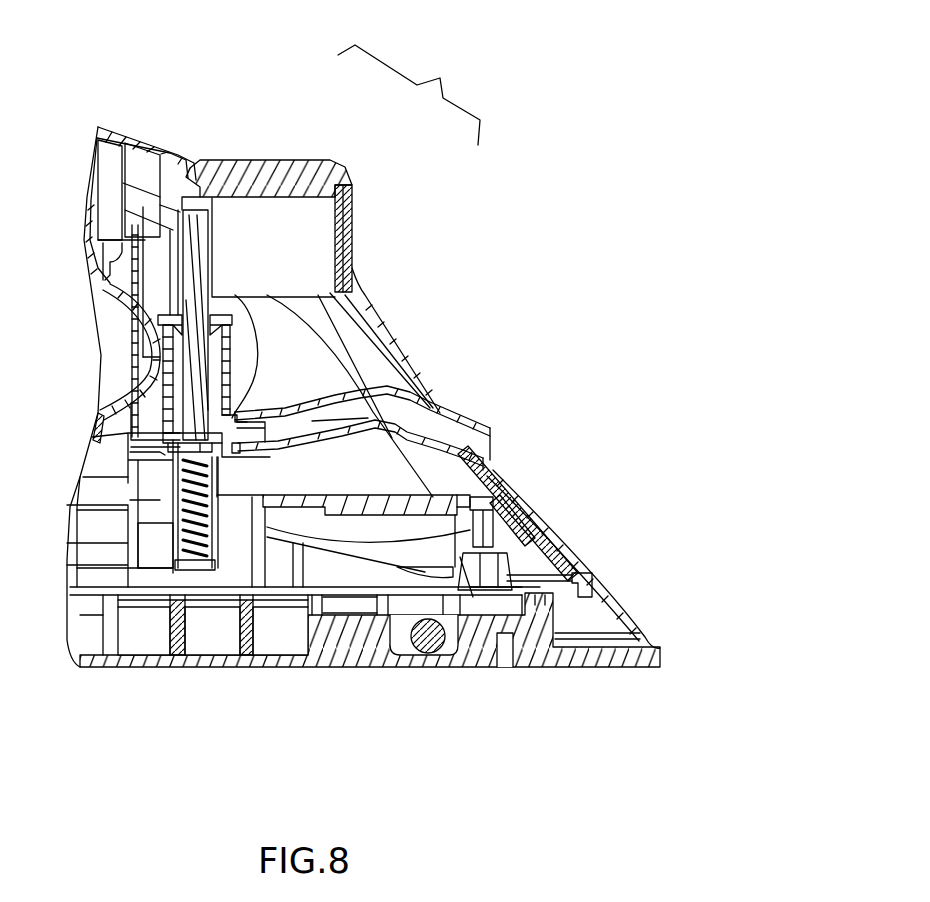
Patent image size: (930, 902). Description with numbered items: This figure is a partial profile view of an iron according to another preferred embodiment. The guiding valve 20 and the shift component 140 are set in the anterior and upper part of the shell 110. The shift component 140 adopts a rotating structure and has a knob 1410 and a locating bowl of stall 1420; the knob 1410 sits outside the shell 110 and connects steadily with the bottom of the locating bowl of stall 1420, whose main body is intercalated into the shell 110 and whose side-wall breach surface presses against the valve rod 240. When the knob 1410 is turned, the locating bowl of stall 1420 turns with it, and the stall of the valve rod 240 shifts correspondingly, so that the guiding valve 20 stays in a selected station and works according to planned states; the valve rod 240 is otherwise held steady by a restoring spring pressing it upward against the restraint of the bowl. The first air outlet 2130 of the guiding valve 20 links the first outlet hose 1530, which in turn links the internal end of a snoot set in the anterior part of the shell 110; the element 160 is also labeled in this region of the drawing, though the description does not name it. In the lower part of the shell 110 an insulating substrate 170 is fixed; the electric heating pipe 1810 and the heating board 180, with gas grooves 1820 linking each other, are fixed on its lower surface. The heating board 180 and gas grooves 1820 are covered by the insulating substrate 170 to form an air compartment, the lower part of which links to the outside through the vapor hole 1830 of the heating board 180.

The shell 110 is at (117, 133).
The valve rod 240 is at (192, 257).
The knob 1410 is at (252, 177).
The shift component 140 is at (416, 88).
The locating bowl of stall 1420 is at (347, 232).
The guiding valve 20 is at (223, 372).
The first outlet hose 1530 is at (407, 405).
The ring 160 is at (490, 425).
The first air outlet 2130 is at (277, 450).
The insulating substrate 170 is at (592, 585).
The gas groove 1820 is at (152, 637).
The heating board 180 is at (323, 637).
The electric heating pipe 1810 is at (428, 654).
The vapor hole 1830 is at (505, 640).